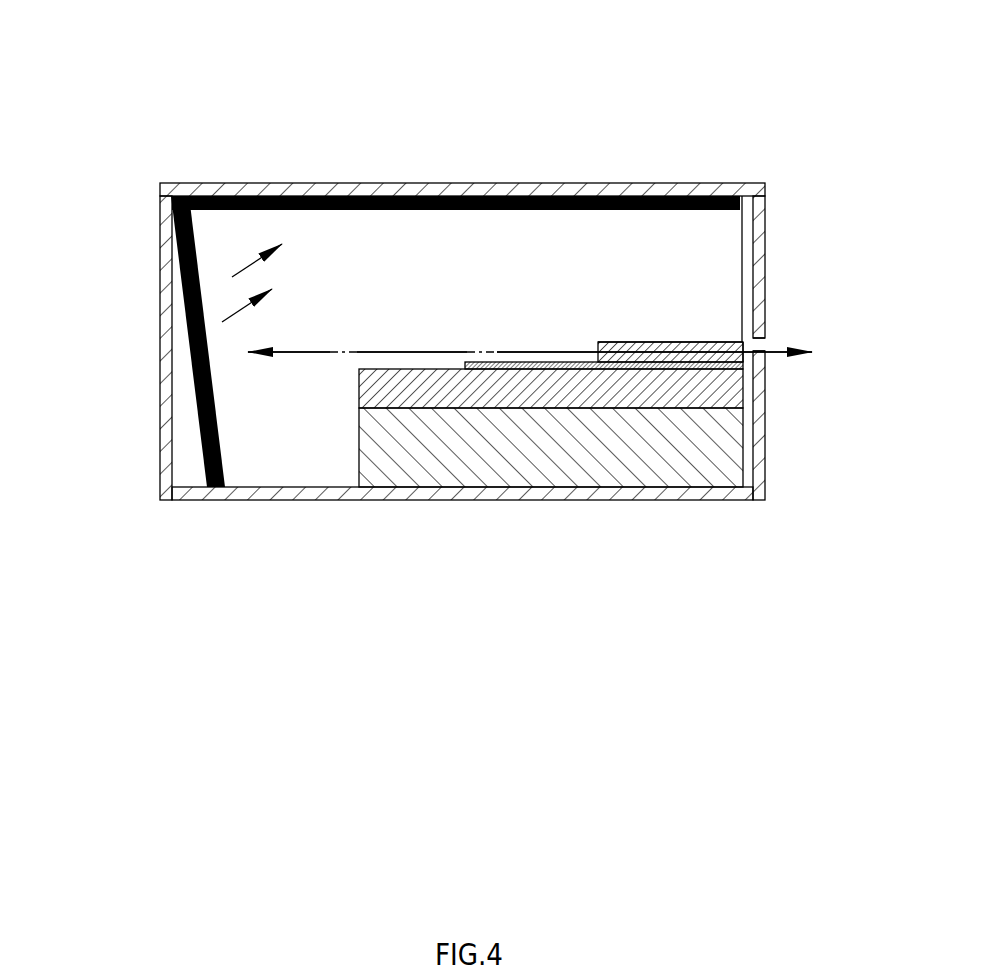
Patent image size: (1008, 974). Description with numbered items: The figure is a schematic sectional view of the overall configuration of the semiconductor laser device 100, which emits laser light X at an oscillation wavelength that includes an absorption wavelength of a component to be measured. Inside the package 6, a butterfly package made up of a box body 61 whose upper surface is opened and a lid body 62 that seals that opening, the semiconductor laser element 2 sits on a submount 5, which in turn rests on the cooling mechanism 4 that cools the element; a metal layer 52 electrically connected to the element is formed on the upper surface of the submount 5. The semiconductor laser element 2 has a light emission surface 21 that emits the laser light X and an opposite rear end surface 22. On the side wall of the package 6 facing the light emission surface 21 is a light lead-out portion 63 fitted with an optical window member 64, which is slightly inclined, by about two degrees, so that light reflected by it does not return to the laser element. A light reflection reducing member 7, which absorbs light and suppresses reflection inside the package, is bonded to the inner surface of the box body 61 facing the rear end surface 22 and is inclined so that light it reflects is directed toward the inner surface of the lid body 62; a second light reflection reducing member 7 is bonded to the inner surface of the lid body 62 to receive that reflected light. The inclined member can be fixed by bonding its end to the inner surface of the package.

The semiconductor laser device 100 is at (249, 85).
The semiconductor laser element 2 is at (690, 342).
The light emission surface 21 is at (743, 358).
The rear end surface 22 is at (598, 342).
The cooling mechanism 4 is at (359, 437).
The submount 5 is at (359, 388).
The metal layer 52 is at (497, 362).
The package 6 is at (465, 343).
The box body 61 is at (160, 273).
The lid body 62 is at (615, 183).
The light lead-out portion 63 is at (766, 331).
The optical window member 64 is at (766, 341).
The light reflection reducing member 7 is at (526, 210).